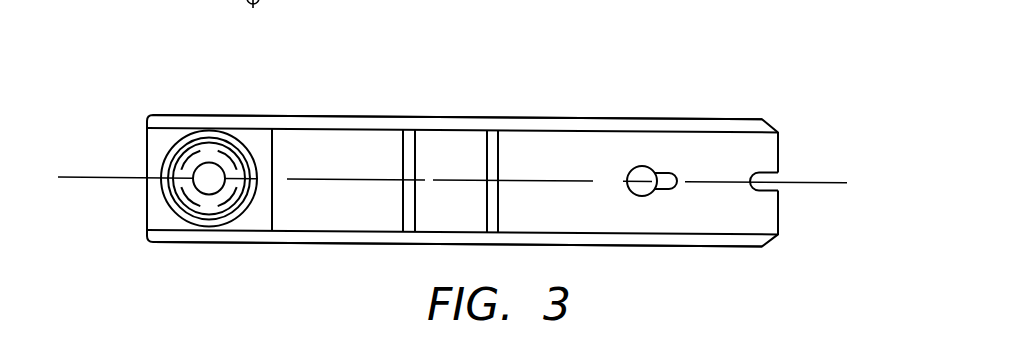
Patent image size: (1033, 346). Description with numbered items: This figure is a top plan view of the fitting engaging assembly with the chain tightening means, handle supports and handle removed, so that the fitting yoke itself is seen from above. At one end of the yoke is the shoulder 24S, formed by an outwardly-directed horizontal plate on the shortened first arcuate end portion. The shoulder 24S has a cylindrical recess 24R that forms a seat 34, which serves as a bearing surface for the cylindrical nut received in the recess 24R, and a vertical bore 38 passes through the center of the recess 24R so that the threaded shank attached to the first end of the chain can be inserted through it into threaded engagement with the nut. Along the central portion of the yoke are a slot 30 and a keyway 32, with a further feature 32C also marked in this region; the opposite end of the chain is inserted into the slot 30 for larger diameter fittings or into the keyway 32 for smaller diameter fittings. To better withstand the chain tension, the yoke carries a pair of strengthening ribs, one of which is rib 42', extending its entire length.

The shoulder 24S is at (253, 145).
The cylindrical recess 24R is at (180, 210).
The slot 30 is at (787, 182).
The keyway 32 is at (647, 173).
The cross channel 32C is at (462, 153).
The seat 34 is at (233, 203).
The vertical bore 38 is at (207, 176).
The strengthening rib 42' is at (468, 268).